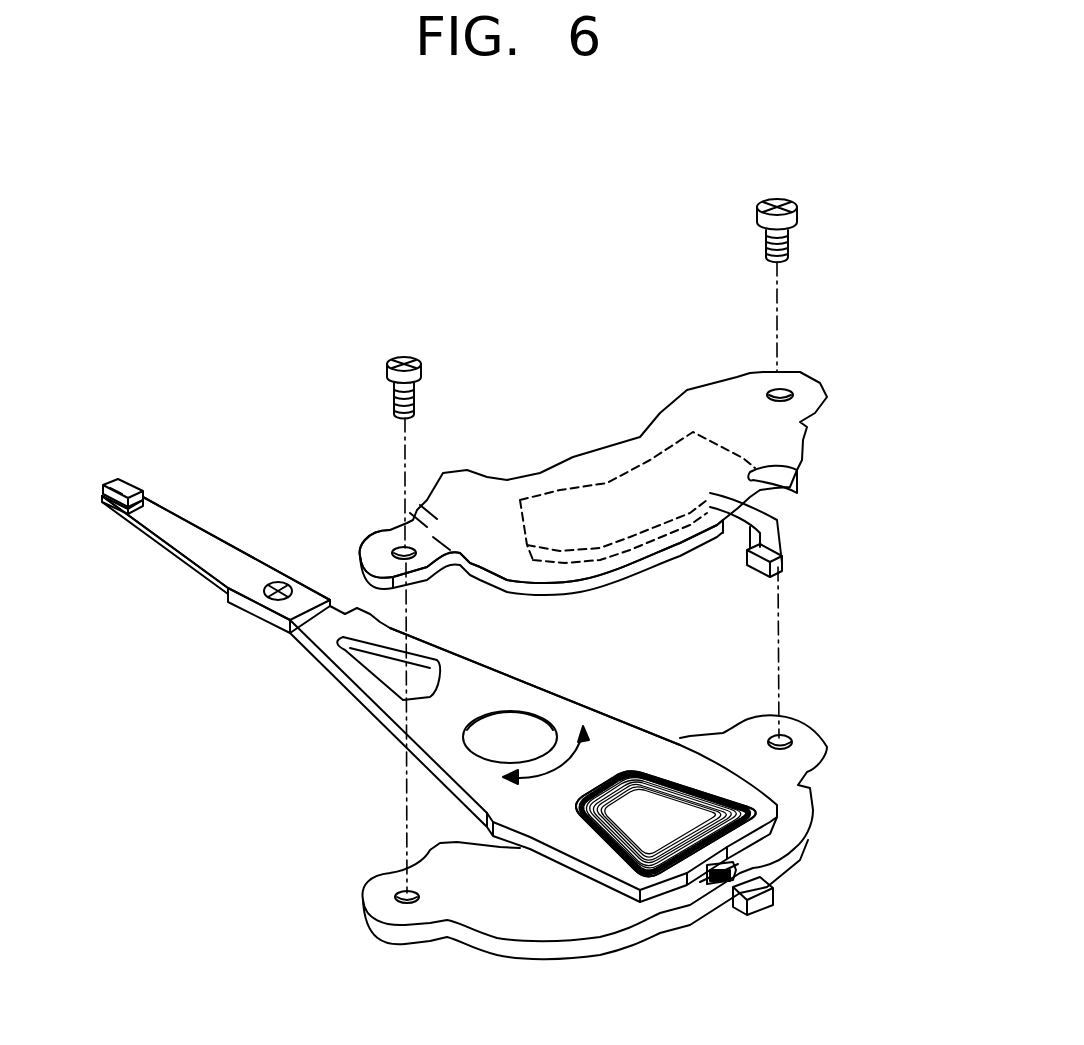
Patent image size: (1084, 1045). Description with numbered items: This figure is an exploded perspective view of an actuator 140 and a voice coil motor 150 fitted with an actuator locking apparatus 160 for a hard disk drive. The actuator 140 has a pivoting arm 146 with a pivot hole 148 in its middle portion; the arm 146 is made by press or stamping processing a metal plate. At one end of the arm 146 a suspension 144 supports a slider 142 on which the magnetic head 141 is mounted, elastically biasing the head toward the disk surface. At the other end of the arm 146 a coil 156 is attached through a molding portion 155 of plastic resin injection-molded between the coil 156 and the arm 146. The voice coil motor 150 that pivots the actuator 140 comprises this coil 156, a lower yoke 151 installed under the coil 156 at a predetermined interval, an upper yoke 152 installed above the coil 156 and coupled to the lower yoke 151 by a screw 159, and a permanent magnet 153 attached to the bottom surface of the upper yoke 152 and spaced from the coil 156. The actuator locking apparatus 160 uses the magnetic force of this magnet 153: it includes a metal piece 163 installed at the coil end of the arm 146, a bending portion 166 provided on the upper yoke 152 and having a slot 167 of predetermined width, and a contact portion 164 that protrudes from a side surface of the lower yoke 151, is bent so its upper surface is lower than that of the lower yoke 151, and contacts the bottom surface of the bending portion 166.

The actuator 140 is at (283, 730).
The magnetic head 141 is at (113, 483).
The slider 142 is at (141, 490).
The suspension 144 is at (255, 565).
The arm 146 is at (461, 678).
The pivot hole 148 is at (513, 735).
The voice coil motor 150 is at (633, 400).
The lower yoke 151 is at (795, 790).
The upper yoke 152 is at (500, 490).
The magnet 153 is at (609, 482).
The molding portion 155 is at (676, 780).
The coil 156 is at (630, 770).
The screw 159 is at (765, 240).
The actuator locking apparatus 160 is at (706, 888).
The metal piece 163 is at (750, 870).
The contact portion 164 is at (757, 898).
The bending portion 166 is at (788, 520).
The slot 167 is at (786, 560).